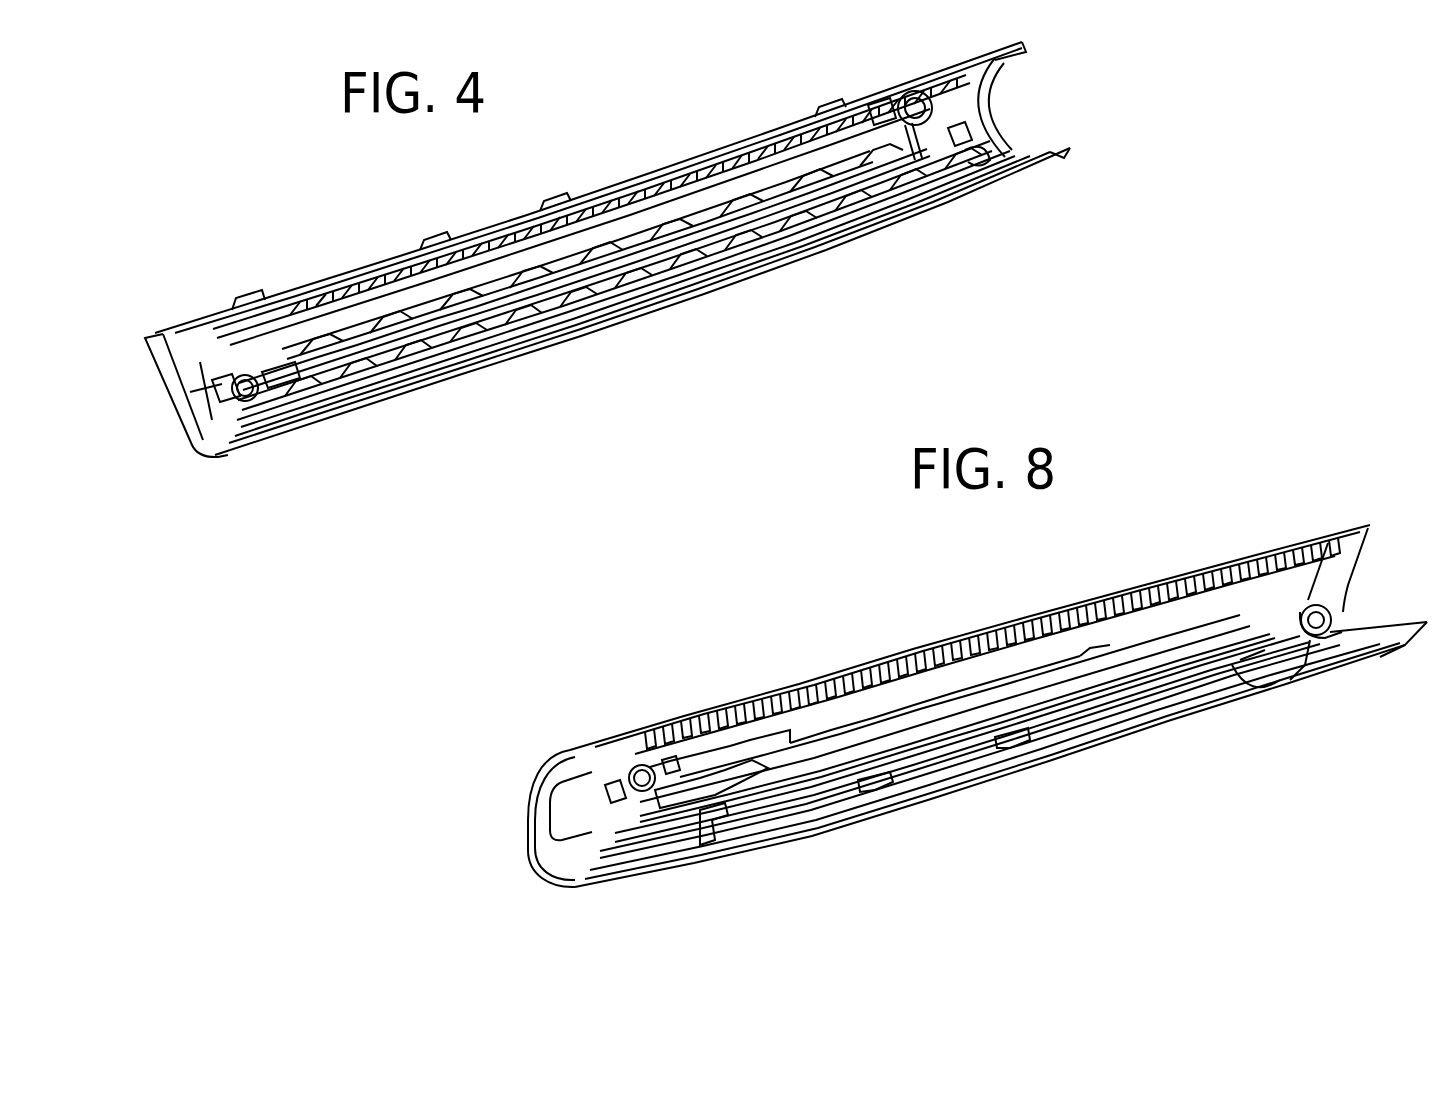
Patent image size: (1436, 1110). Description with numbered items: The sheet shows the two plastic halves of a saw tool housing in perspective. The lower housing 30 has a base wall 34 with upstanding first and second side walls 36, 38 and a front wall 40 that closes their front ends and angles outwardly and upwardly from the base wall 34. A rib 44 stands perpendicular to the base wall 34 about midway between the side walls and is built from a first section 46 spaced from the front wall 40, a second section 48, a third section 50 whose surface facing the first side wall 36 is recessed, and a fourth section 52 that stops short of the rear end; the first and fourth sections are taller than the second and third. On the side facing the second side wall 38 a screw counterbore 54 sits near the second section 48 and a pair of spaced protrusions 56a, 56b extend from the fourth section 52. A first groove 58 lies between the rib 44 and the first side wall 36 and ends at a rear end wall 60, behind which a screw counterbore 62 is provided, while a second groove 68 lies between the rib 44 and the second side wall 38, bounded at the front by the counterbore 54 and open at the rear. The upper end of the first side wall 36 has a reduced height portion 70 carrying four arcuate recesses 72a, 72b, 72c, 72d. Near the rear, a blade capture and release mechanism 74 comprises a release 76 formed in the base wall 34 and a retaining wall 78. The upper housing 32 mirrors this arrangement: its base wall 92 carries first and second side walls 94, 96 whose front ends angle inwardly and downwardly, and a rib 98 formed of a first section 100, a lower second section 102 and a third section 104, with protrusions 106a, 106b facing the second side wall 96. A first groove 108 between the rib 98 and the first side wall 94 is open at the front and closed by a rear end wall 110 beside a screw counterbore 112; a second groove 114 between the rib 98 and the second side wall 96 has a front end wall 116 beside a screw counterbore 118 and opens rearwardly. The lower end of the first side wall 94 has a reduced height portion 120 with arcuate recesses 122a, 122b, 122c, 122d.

In FIG. 4, the lower housing 30 is at (512, 365).
In FIG. 4, the base wall 34 is at (1000, 113).
In FIG. 4, the first side wall 36 is at (505, 220).
In FIG. 4, the second side wall 38 is at (637, 290).
In FIG. 4, the front wall 40 is at (176, 402).
In FIG. 4, the rib 44 is at (690, 255).
In FIG. 4, the first section 46 is at (207, 411).
In FIG. 4, the second section 48 is at (273, 388).
In FIG. 4, the third section 50 is at (258, 395).
In FIG. 4, the fourth section 52 is at (400, 340).
In FIG. 4, the screw counterbore 54 is at (227, 392).
In FIG. 4, the protrusion 56a is at (400, 335).
In FIG. 4, the protrusion 56b is at (604, 262).
In FIG. 4, the first groove 58 is at (560, 205).
In FIG. 4, the rear end wall 60 is at (878, 112).
In FIG. 4, the screw counterbore 62 is at (910, 95).
In FIG. 4, the second groove 68 is at (767, 230).
In FIG. 4, the reduced height portion 70 is at (318, 283).
In FIG. 4, the arcuate recess 72a is at (246, 308).
In FIG. 4, the arcuate recess 72b is at (432, 245).
In FIG. 4, the arcuate recess 72c is at (548, 205).
In FIG. 4, the arcuate recess 72d is at (832, 115).
In FIG. 4, the blade capture and release mechanism 74 is at (973, 160).
In FIG. 4, the release 76 is at (953, 138).
In FIG. 4, the retaining wall 78 is at (935, 205).
In FIG. 8, the upper housing 32 is at (854, 836).
In FIG. 8, the base wall 92 is at (1347, 620).
In FIG. 8, the first side wall 94 is at (1145, 700).
In FIG. 8, the second side wall 96 is at (1103, 597).
In FIG. 8, the rib 98 is at (992, 685).
In FIG. 8, the first section 100 is at (612, 794).
In FIG. 8, the second section 102 is at (693, 794).
In FIG. 8, the third section 104 is at (831, 728).
In FIG. 8, the protrusion 106a is at (786, 742).
In FIG. 8, the protrusion 106b is at (1050, 663).
In FIG. 8, the first groove 108 is at (1053, 693).
In FIG. 8, the rear end wall 110 is at (1297, 647).
In FIG. 8, the screw counterbore 112 is at (1340, 663).
In FIG. 8, the second groove 114 is at (925, 697).
In FIG. 8, the front end wall 116 is at (669, 766).
In FIG. 8, the screw counterbore 118 is at (650, 766).
In FIG. 8, the reduced height portion 120 is at (958, 775).
In FIG. 8, the arcuate recess 122a is at (724, 850).
In FIG. 8, the arcuate recess 122b is at (895, 797).
In FIG. 8, the arcuate recess 122c is at (1015, 745).
In FIG. 8, the arcuate recess 122d is at (1250, 690).